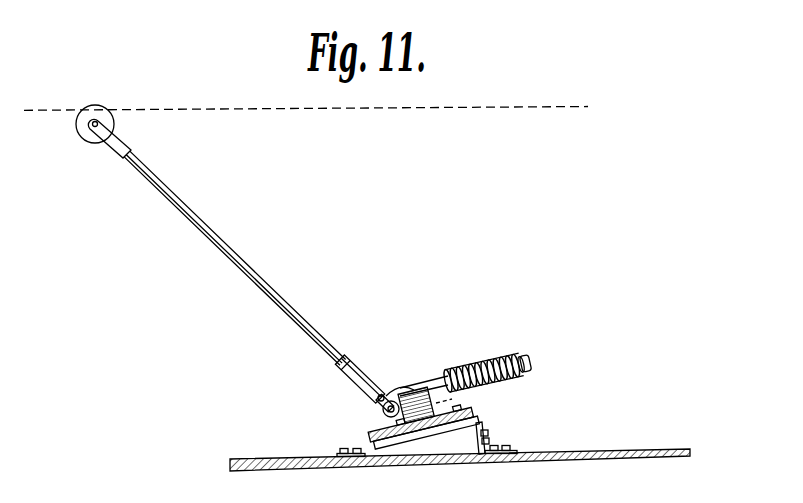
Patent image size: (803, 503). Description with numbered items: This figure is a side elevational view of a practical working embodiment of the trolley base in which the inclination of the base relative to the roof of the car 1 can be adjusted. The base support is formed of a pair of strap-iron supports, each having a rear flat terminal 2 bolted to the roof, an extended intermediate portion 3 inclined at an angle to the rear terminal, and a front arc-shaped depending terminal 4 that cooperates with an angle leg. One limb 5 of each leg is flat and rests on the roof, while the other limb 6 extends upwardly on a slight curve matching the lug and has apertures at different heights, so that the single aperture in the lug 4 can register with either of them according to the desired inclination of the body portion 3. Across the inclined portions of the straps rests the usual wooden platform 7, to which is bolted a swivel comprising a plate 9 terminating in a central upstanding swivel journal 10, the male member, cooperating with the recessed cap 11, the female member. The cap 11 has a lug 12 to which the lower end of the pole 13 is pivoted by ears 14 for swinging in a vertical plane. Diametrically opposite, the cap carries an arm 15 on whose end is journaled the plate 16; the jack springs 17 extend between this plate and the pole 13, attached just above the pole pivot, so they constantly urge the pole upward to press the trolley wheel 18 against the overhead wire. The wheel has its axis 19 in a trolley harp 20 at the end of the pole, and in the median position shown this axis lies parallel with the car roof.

The roof of the car 1 is at (616, 449).
The rear flat terminal 2 is at (338, 450).
The intermediate portion 3 is at (410, 444).
The front arc-shaped depending terminal 4 is at (482, 432).
The limb 5 is at (513, 448).
The limb 6 is at (491, 443).
The wooden platform 7 is at (375, 431).
The plate 9 is at (473, 420).
The swivel journal 10 is at (458, 397).
The recessed cap 11 is at (408, 388).
The lug 12 is at (392, 384).
The pole 13 is at (243, 268).
The ears 14 is at (373, 398).
The arm 15 is at (434, 373).
The plate 16 is at (523, 352).
The jack springs 17 is at (477, 353).
The trolley wheel 18 is at (90, 112).
The axis 19 is at (88, 127).
The trolley harp 20 is at (112, 140).